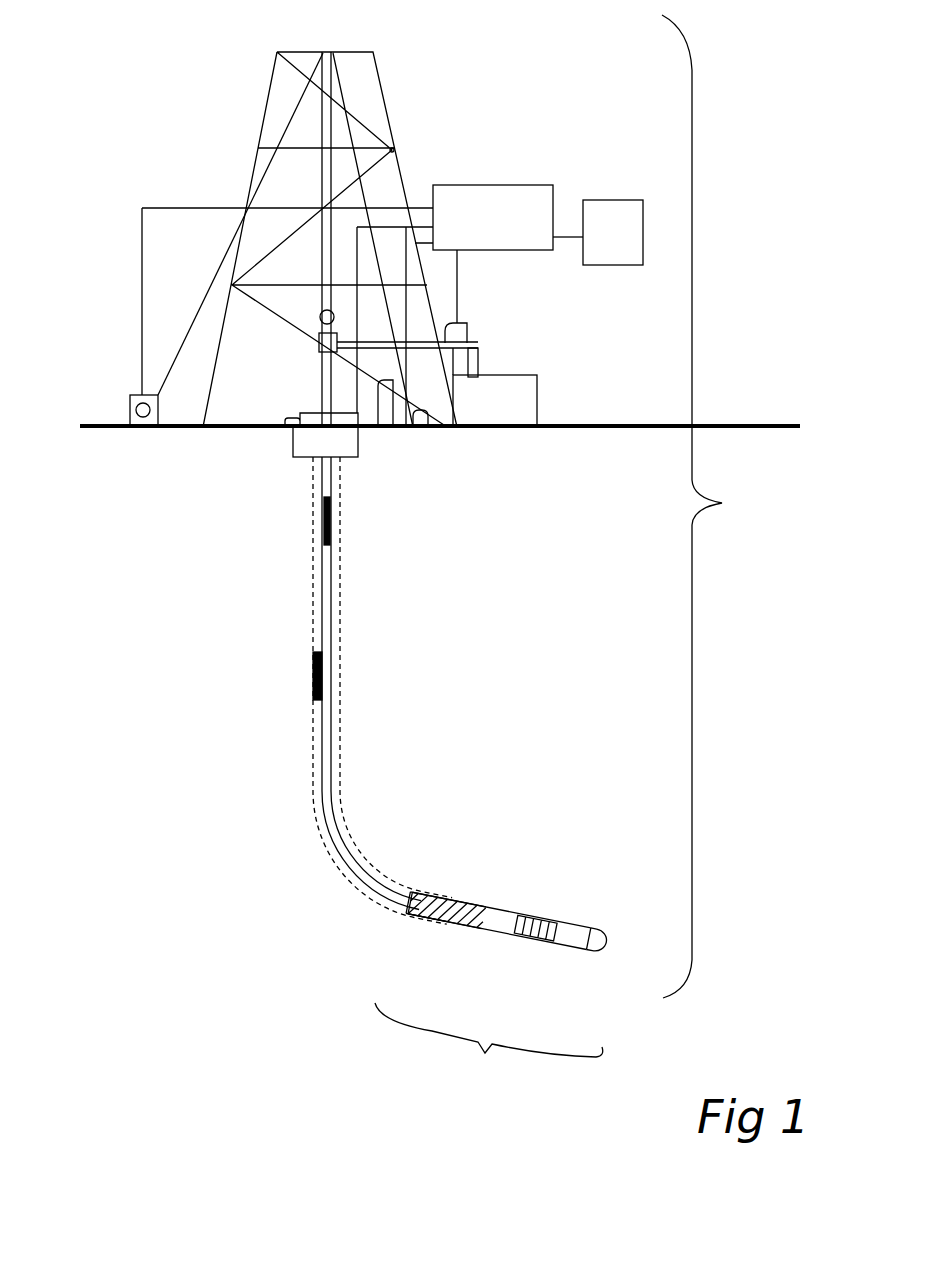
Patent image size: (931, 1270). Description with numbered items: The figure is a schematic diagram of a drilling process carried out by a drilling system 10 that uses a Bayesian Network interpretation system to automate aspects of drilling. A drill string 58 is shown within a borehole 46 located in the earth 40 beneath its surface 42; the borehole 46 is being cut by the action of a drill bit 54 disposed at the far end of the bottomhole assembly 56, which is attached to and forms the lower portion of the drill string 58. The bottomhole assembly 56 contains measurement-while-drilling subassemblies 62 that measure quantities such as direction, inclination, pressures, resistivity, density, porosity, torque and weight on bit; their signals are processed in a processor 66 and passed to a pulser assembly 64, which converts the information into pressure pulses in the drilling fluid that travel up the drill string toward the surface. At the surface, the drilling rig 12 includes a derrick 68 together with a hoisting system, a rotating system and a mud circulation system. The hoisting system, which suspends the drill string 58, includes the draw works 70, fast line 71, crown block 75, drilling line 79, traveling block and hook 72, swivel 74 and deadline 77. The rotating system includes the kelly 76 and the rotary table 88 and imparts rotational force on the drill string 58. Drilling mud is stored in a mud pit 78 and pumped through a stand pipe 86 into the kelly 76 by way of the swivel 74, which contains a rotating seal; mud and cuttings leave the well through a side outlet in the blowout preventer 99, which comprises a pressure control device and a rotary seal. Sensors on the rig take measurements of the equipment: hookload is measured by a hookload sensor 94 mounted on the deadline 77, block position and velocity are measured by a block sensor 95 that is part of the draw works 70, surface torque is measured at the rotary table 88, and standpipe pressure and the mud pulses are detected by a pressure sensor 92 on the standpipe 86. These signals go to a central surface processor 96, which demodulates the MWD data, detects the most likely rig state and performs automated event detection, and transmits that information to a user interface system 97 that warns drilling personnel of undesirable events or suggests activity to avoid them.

The drilling system 10 is at (715, 506).
The drilling rig 12 is at (184, 95).
The earth 40 is at (517, 557).
The surface 42 is at (585, 428).
The borehole 46 is at (312, 555).
The drill bit 54 is at (607, 942).
The bottomhole assembly 56 is at (489, 992).
The drill string 58 is at (343, 555).
The subassemblies 62 is at (546, 918).
The pulser assembly 64 is at (421, 920).
The processor 66 is at (463, 899).
The derrick 68 is at (393, 151).
The draw works 70 is at (130, 397).
The fast line 71 is at (200, 312).
The traveling block and hook 72 is at (320, 318).
The swivel 74 is at (318, 348).
The crown block 75 is at (322, 50).
The kelly 76 is at (318, 391).
The deadline 77 is at (382, 427).
The mud pit 78 is at (510, 416).
The drilling line 79 is at (318, 177).
The stand pipe 86 is at (480, 352).
The rotary table 88 is at (300, 425).
The pressure sensor 92 is at (466, 322).
The hookload sensor 94 is at (428, 427).
The block sensor 95 is at (152, 428).
The surface processor 96 is at (508, 230).
The user interface system 97 is at (628, 248).
The blowout preventer 99 is at (295, 460).